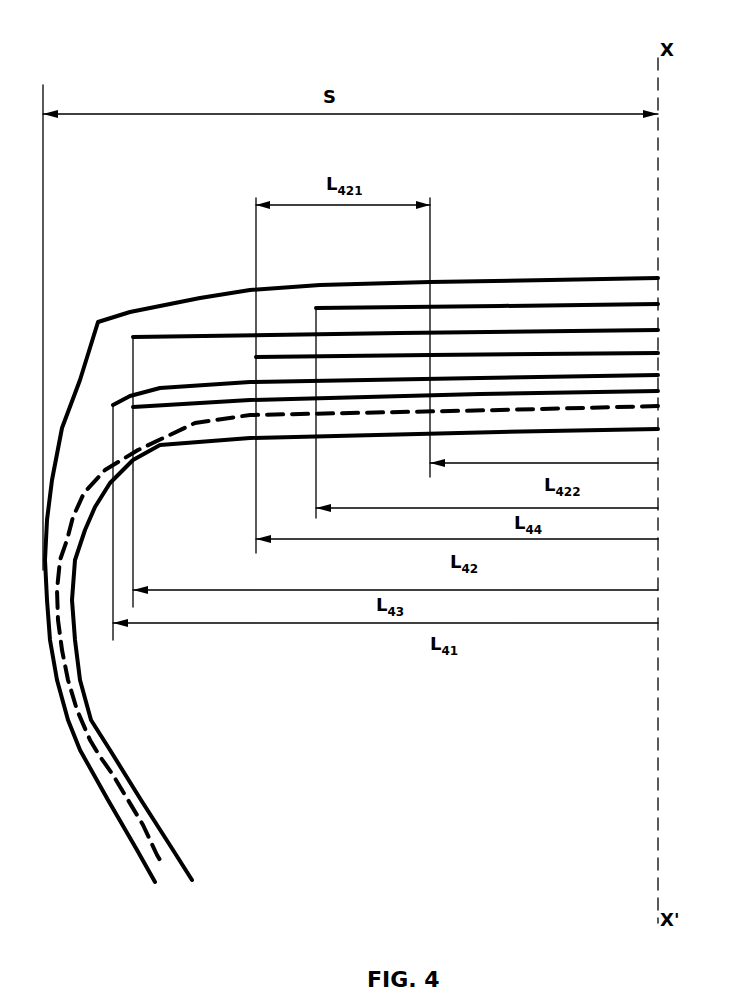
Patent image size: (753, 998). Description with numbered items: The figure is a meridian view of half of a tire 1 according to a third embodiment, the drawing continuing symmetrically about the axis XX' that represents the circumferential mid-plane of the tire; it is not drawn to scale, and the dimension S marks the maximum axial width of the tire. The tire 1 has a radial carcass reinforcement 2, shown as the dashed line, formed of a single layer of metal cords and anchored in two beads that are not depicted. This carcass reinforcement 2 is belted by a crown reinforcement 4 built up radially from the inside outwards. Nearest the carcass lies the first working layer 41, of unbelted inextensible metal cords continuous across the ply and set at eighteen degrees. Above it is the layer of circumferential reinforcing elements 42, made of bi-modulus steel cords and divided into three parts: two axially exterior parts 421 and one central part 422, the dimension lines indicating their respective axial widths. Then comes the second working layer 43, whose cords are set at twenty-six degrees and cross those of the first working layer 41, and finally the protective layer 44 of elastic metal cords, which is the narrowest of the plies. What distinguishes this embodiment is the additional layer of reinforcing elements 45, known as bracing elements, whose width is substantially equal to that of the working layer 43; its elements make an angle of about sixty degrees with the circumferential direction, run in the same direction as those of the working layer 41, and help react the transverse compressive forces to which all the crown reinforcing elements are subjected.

The tire 1 is at (116, 268).
The radial carcass reinforcement 2 is at (78, 528).
The crown reinforcement 4 is at (680, 362).
The first working layer 41 is at (640, 374).
The layer of circumferential reinforcing elements 42 is at (457, 354).
The axially exterior part 421 is at (276, 355).
The central part 422 is at (545, 353).
The second working layer 43 is at (352, 327).
The protective layer 44 is at (463, 303).
The additional layer of reinforcing elements 45 is at (185, 408).